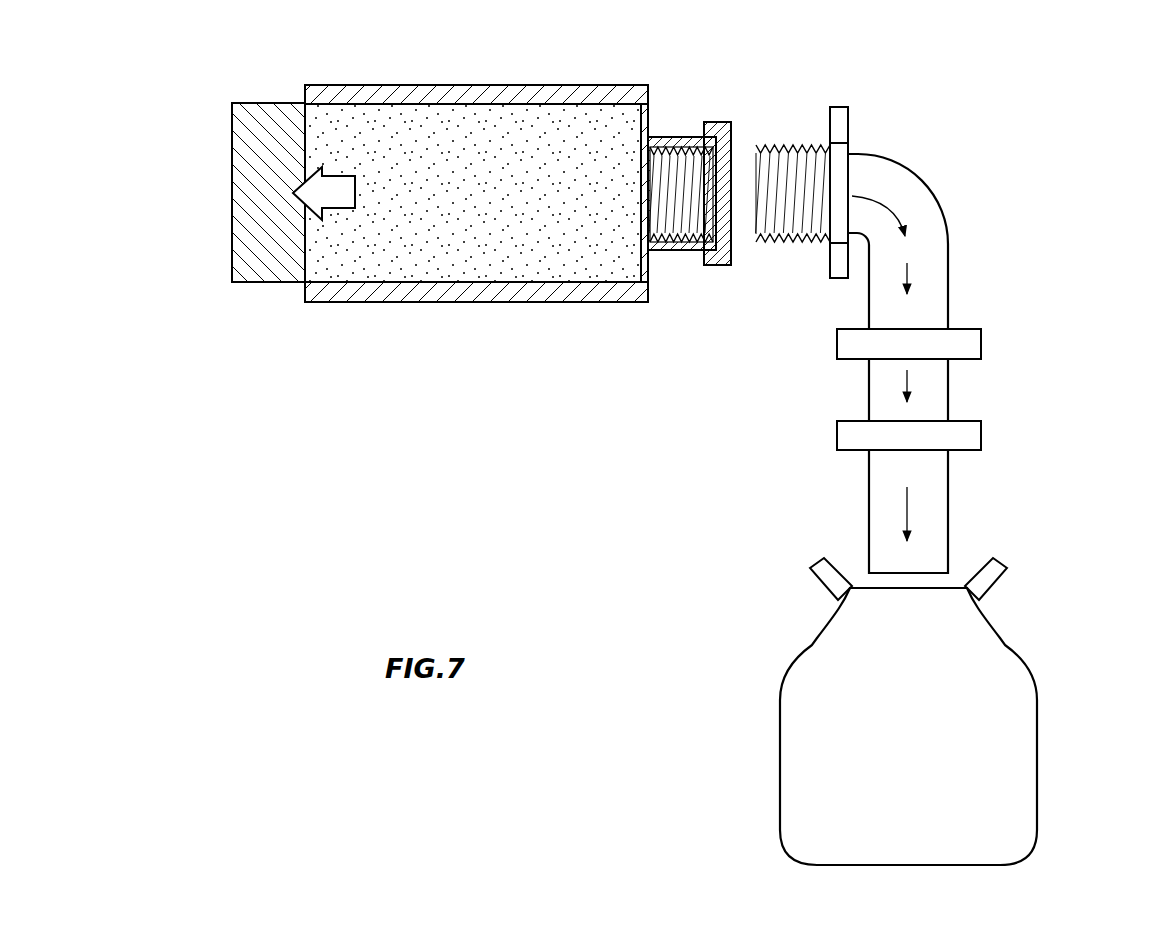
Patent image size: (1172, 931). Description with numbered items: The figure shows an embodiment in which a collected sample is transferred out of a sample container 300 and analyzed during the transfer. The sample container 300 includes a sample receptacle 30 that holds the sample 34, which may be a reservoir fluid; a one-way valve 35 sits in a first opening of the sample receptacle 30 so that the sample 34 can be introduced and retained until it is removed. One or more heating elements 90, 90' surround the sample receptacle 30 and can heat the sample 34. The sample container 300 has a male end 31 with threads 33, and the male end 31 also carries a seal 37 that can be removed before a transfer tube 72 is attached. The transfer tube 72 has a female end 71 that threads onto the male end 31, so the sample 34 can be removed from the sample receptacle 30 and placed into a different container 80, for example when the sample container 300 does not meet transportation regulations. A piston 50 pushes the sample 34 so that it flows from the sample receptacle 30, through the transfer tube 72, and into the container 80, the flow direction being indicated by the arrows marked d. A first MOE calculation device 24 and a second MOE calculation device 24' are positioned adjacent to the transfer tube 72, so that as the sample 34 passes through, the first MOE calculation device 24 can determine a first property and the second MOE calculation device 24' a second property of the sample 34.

The sample container 300 is at (216, 82).
The sample receptacle 30 is at (305, 97).
The piston 50 is at (232, 226).
The heating element 90 is at (476, 70).
The heating element 90' is at (476, 325).
The sample 34 is at (557, 128).
The valve 35 is at (343, 210).
The male end 31 is at (688, 264).
The threads 33 is at (687, 170).
The seal 37 is at (733, 133).
The female end 71 is at (843, 107).
The transfer tube 72 is at (945, 186).
The MOE calculation device 24 is at (955, 333).
The MOE calculation device 24' is at (959, 426).
The container 80 is at (1037, 722).
The flow direction d is at (882, 203).